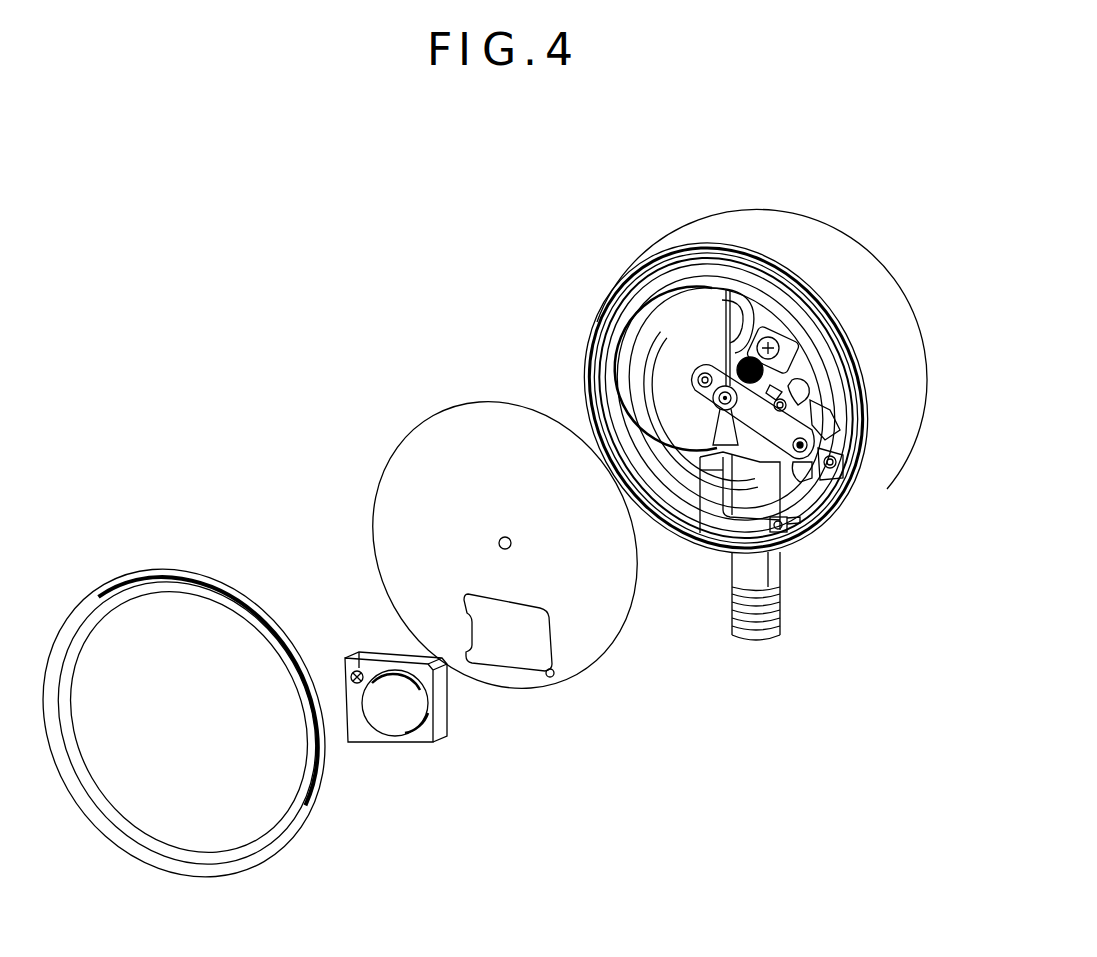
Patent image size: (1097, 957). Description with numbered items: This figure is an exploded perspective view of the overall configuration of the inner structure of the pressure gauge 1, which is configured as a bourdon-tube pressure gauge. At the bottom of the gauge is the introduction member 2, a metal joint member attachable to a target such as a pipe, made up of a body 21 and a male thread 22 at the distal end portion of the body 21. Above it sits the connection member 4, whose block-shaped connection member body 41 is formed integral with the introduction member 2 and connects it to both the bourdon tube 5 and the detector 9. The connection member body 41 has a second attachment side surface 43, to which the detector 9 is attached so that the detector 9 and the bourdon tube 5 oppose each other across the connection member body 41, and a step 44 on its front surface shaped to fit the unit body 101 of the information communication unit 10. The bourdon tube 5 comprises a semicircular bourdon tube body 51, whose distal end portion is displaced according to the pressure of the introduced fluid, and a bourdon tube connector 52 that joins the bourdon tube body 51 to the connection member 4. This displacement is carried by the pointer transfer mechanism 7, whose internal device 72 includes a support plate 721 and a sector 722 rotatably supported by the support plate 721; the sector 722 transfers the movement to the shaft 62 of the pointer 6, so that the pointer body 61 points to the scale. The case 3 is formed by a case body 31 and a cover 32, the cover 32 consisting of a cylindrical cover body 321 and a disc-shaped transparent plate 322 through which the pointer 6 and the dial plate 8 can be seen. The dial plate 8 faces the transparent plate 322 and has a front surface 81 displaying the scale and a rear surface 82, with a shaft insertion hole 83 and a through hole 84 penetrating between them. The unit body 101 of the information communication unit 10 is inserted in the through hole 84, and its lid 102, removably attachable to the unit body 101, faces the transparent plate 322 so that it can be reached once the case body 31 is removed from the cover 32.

The pressure gauge 1 is at (882, 148).
The introduction member 2 is at (862, 632).
The body 21 is at (776, 587).
The male thread 22 is at (772, 630).
The case 3 is at (727, 210).
The case body 31 is at (832, 252).
The cover 32 is at (215, 513).
The cover body 321 is at (122, 583).
The transparent plate 322 is at (165, 612).
The connection member 4 is at (730, 540).
The connection member body 41 is at (715, 515).
The second attachment side surface 43 is at (820, 530).
The step 44 is at (773, 530).
The bourdon tube 5 is at (660, 283).
The bourdon tube body 51 is at (687, 268).
The bourdon tube connector 52 is at (687, 473).
The pointer 6 is at (530, 318).
The pointer body 61 is at (712, 356).
The shaft 62 is at (712, 396).
The pointer transfer mechanism 7 is at (777, 314).
The internal device 72 is at (806, 330).
The support plate 721 is at (800, 345).
The sector 722 is at (810, 385).
The dial plate 8 is at (590, 652).
The front surface 81 is at (438, 440).
The rear surface 82 is at (475, 440).
The shaft insertion hole 83 is at (500, 535).
The through hole 84 is at (526, 626).
The detector 9 is at (838, 488).
The information communication unit 10 is at (421, 768).
The unit body 101 is at (355, 717).
The lid 102 is at (402, 707).